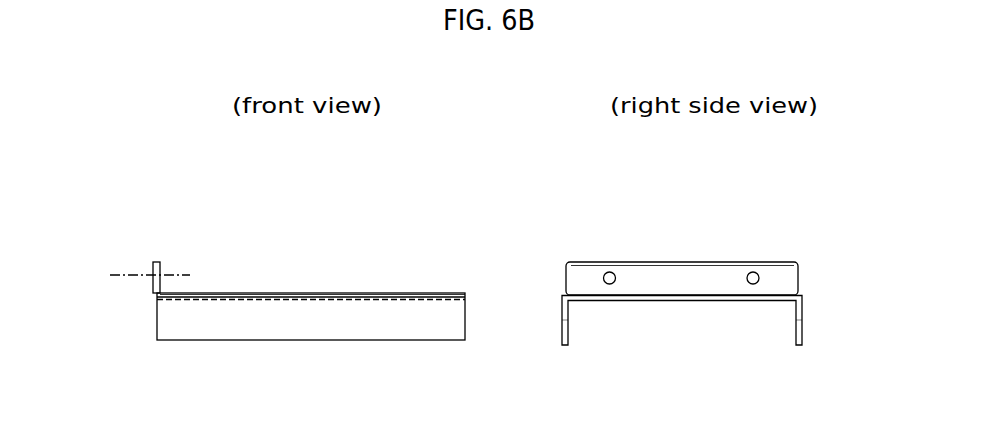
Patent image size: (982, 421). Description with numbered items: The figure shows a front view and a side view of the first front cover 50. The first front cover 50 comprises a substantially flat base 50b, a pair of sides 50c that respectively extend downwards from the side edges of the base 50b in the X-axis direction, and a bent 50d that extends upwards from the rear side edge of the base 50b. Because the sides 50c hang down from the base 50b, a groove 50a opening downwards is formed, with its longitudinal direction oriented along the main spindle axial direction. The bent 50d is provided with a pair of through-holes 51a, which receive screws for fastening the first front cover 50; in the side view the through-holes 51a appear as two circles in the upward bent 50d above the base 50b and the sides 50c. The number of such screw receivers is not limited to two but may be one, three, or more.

The first front cover 50 is at (196, 158).
The groove 50a is at (329, 300).
The base 50b is at (292, 293).
The sides 50c is at (260, 340).
The bent 50d is at (154, 312).
The through-holes 51a is at (163, 273).